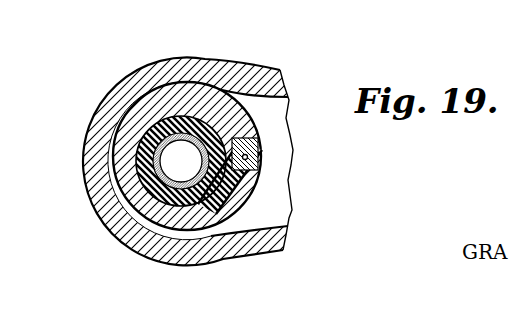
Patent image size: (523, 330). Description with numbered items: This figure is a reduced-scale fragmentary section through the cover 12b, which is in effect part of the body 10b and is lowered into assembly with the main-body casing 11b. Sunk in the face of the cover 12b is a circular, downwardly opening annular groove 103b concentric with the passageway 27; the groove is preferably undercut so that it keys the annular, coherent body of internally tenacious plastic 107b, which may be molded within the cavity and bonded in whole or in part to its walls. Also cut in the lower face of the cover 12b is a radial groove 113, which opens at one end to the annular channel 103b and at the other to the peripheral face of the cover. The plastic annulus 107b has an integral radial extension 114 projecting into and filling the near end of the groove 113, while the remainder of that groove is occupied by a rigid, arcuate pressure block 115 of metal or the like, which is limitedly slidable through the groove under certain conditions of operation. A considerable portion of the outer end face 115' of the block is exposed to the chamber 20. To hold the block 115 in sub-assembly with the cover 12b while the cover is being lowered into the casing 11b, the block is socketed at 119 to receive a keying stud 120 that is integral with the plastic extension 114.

The body 10b is at (140, 260).
The main-body casing 11b is at (97, 200).
The cover 12b is at (186, 58).
The chamber 20 is at (268, 214).
The passageway 27 is at (181, 161).
The annular groove 103b is at (218, 90).
The annular plastic body 107b is at (143, 137).
The radial groove 113 is at (236, 123).
The radial extension 114 is at (262, 197).
The pressure block 115 is at (262, 173).
The outer end face 115' is at (284, 159).
The socket 119 is at (238, 140).
The keying stud 120 is at (258, 168).